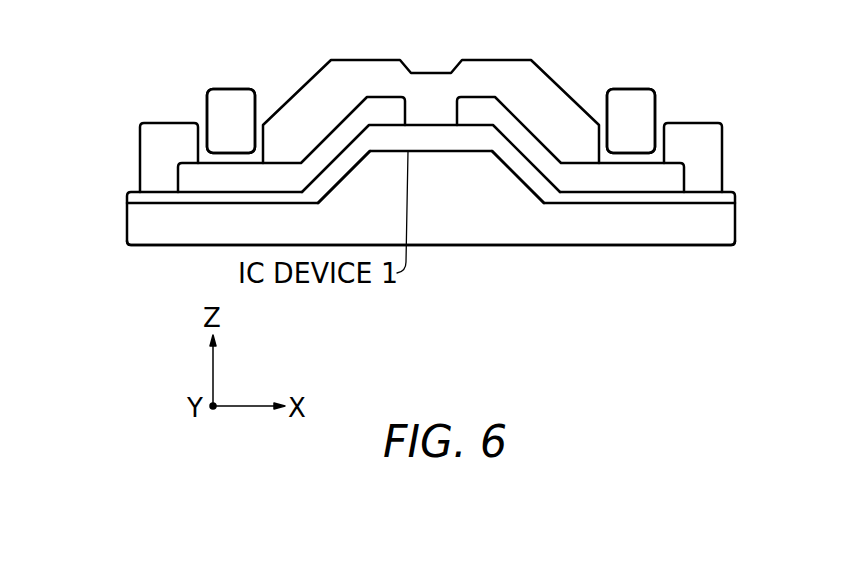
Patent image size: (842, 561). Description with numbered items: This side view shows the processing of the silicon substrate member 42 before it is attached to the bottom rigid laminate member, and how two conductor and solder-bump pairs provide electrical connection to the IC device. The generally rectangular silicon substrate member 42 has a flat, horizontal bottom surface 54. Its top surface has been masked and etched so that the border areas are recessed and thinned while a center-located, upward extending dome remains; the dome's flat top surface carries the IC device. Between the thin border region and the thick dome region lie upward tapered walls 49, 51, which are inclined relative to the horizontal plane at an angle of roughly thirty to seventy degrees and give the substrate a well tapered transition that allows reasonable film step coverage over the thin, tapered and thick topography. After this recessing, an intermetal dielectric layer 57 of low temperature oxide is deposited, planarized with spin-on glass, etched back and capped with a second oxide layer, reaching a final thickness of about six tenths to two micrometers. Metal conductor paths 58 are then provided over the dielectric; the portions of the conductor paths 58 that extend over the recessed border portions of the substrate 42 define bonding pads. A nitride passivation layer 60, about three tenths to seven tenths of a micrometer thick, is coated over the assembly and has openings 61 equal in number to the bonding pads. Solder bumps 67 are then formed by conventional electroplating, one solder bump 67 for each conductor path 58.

The silicon substrate member 42 is at (488, 235).
The upward tapered wall 49 is at (512, 172).
The upward tapered wall 51 is at (350, 172).
The bottom surface 54 is at (587, 247).
The intermetal dielectric layer 57 is at (126, 197).
The metal conductor path 58 is at (340, 124).
The passivation layer 60 is at (522, 59).
The opening 61 is at (207, 107).
The solder bump 67 is at (227, 95).